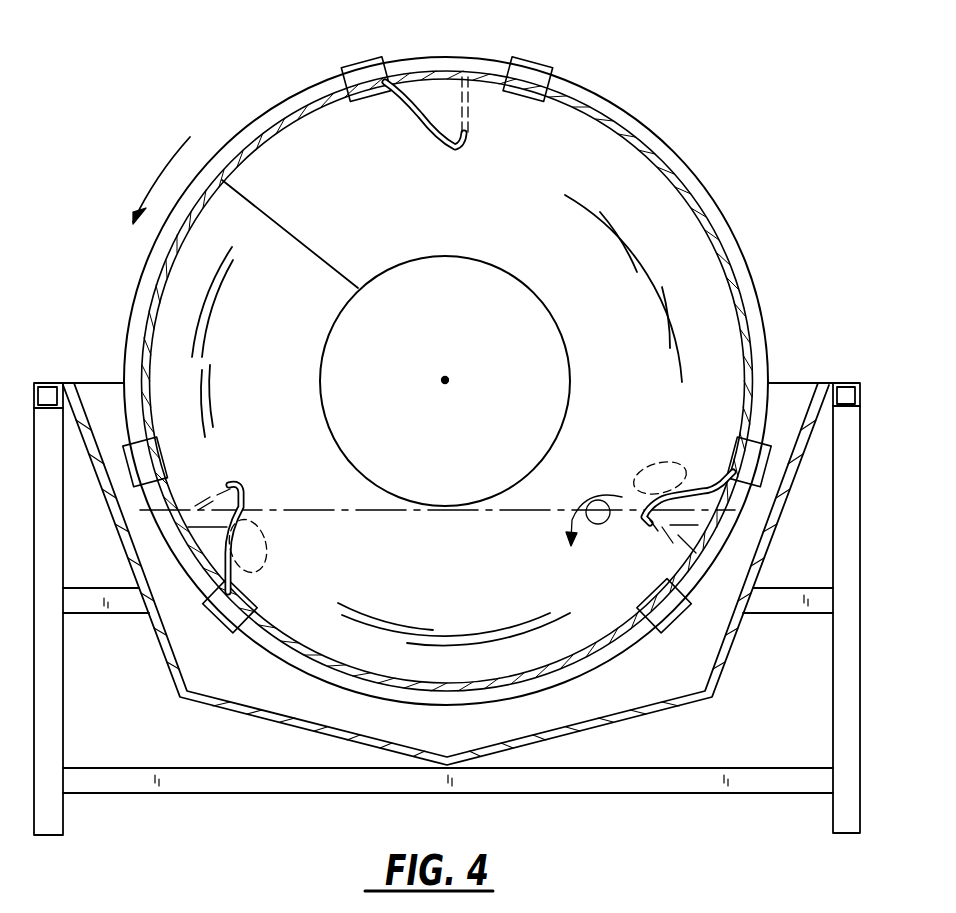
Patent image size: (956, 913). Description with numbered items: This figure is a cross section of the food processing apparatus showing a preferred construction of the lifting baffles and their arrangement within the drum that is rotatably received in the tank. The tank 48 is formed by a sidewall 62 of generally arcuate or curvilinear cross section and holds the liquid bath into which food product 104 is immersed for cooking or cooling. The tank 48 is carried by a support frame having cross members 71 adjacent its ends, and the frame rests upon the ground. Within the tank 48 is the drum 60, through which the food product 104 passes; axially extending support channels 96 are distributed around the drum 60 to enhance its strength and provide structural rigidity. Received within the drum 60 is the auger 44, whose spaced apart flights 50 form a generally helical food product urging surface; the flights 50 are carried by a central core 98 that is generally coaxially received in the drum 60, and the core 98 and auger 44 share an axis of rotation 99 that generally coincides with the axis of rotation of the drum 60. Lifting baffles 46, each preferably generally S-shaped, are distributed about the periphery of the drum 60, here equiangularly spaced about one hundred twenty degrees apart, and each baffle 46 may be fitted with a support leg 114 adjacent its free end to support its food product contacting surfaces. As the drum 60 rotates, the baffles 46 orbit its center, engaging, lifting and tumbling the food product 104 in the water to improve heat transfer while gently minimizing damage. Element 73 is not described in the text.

The auger 44 is at (487, 217).
The lifting baffle 46 is at (432, 135).
The tank 48 is at (160, 640).
The auger flight 50 is at (677, 337).
The drum 60 is at (142, 278).
The sidewall 62 is at (727, 690).
The cross member 71 is at (785, 613).
The support post foot 73 is at (63, 835).
The support channel 96 is at (505, 62).
The core 98 is at (563, 362).
The axis of rotation 99 is at (447, 382).
The food product 104 is at (268, 545).
The support leg 114 is at (198, 498).